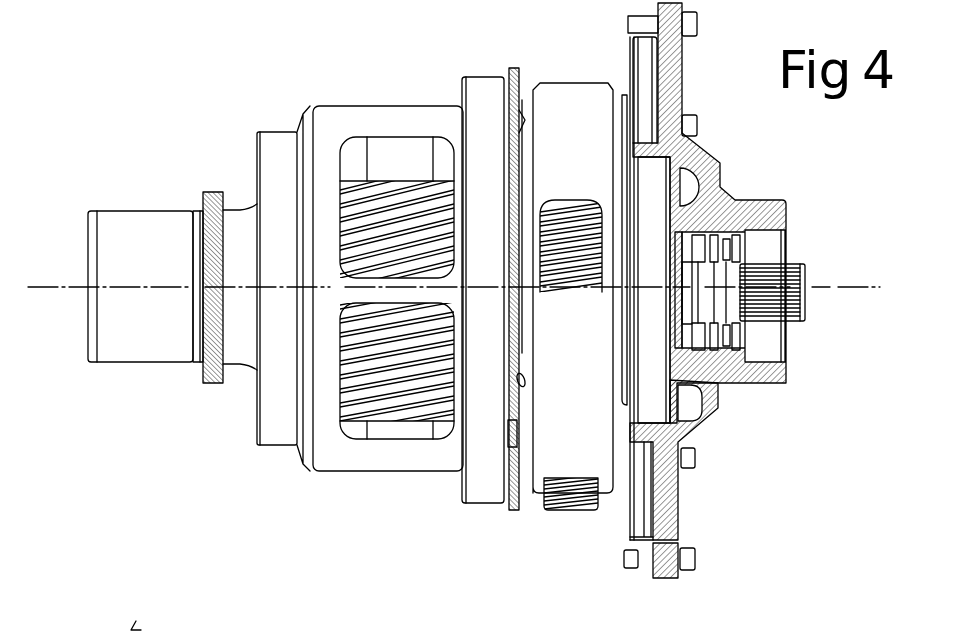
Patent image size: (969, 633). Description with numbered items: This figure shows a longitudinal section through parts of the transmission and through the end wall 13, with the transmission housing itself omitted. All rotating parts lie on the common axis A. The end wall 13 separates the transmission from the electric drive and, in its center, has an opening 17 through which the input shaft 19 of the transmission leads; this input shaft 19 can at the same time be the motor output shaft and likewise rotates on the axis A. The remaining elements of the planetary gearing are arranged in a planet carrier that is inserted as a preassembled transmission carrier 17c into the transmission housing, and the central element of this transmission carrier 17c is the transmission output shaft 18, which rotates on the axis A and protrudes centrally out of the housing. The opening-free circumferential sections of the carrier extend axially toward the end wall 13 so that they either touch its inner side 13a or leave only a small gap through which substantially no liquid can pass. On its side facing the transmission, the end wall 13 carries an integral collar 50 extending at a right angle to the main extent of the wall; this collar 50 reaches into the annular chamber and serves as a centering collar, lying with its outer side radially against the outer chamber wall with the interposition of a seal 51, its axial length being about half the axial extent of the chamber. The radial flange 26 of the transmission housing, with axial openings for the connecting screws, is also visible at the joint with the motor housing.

The axis A is at (163, 287).
The end wall 13 is at (665, 473).
The inner side of the end wall 13a is at (658, 80).
The opening 17 is at (742, 248).
The transmission carrier 17c is at (404, 122).
The transmission output shaft 18 is at (127, 345).
The input shaft 19 is at (790, 308).
The radial flange 26 is at (665, 567).
The collar 50 is at (645, 538).
The seal 51 is at (640, 548).